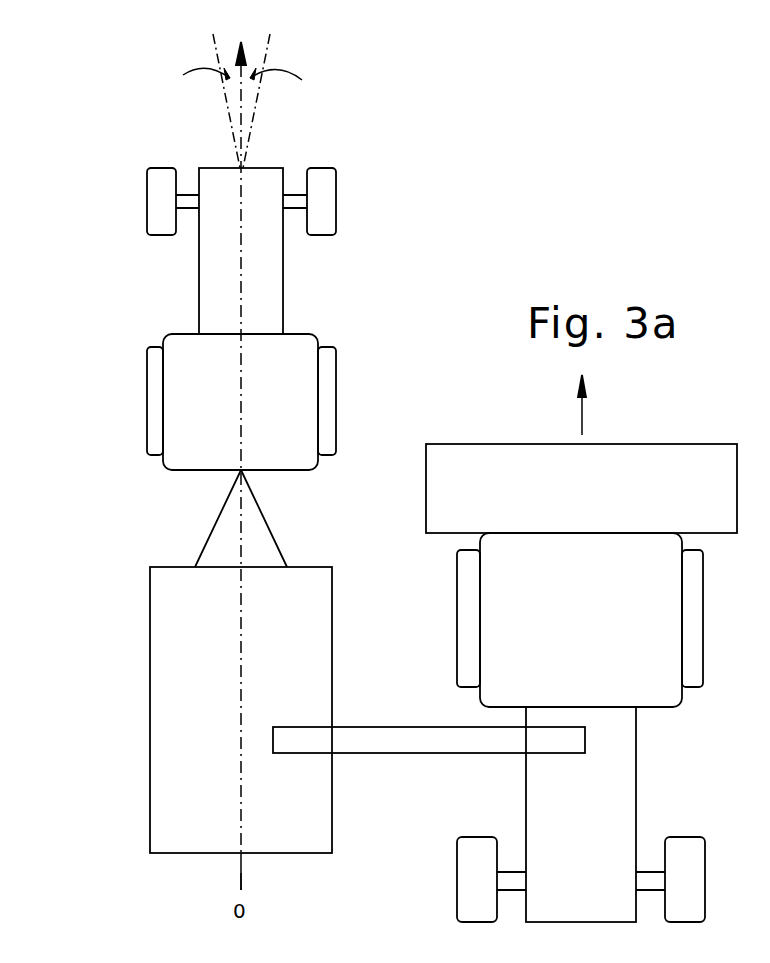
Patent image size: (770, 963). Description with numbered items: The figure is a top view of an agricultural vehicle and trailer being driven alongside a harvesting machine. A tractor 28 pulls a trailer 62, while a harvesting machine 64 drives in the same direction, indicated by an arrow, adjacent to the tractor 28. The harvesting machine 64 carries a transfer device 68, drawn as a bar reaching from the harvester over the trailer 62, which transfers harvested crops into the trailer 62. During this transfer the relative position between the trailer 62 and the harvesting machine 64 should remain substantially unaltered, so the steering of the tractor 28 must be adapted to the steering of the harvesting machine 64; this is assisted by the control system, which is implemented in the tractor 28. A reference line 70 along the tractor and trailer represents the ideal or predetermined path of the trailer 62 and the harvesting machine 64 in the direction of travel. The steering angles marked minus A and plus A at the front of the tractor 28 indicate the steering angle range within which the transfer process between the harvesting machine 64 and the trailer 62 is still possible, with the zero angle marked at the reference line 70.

The tractor 28 is at (148, 300).
The trailer 62 is at (123, 698).
The harvesting machine 64 is at (657, 792).
The transfer device 68 is at (415, 727).
The reference line 70 is at (242, 873).